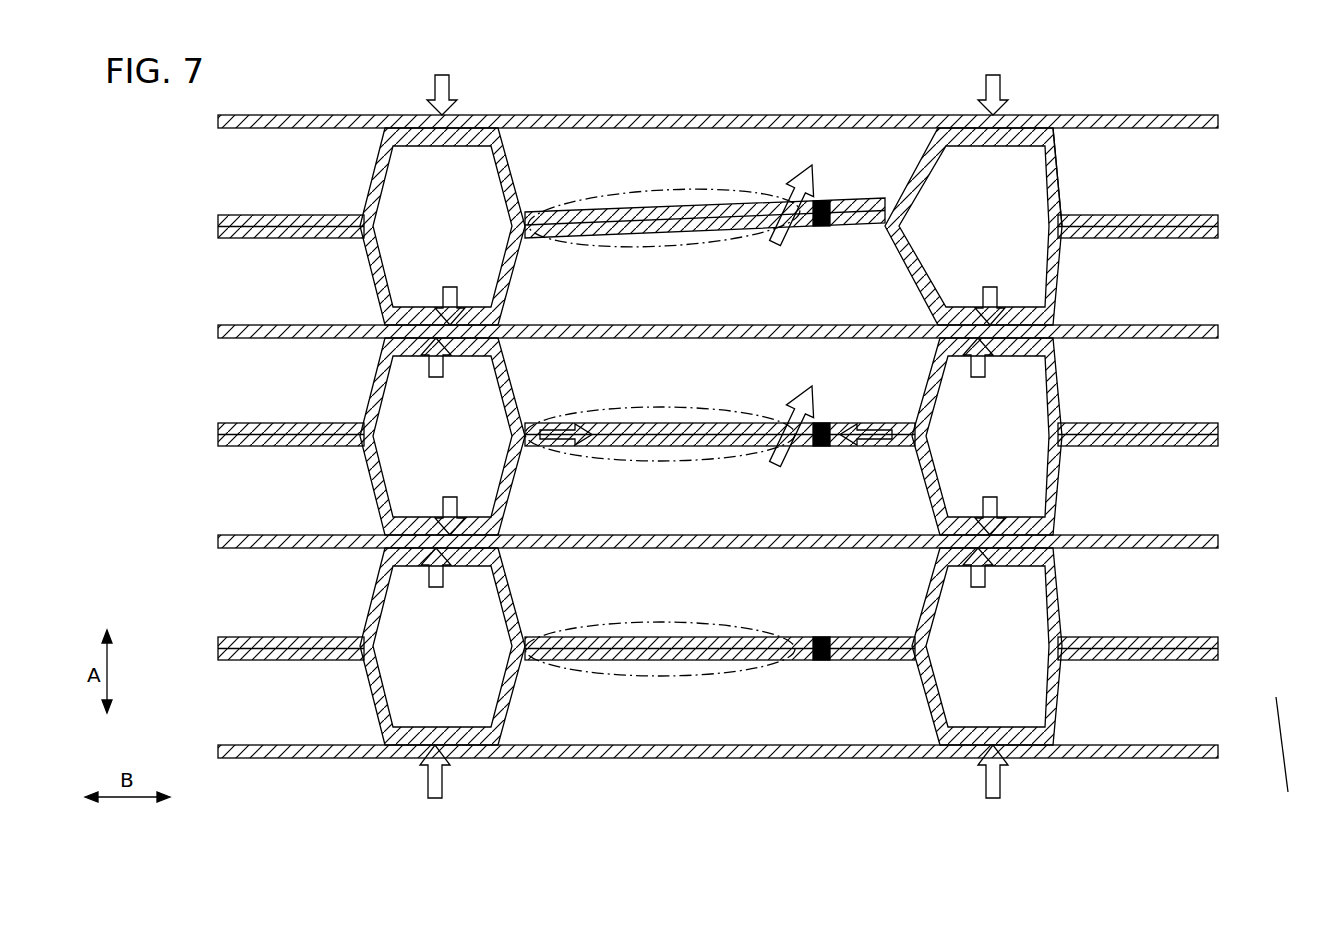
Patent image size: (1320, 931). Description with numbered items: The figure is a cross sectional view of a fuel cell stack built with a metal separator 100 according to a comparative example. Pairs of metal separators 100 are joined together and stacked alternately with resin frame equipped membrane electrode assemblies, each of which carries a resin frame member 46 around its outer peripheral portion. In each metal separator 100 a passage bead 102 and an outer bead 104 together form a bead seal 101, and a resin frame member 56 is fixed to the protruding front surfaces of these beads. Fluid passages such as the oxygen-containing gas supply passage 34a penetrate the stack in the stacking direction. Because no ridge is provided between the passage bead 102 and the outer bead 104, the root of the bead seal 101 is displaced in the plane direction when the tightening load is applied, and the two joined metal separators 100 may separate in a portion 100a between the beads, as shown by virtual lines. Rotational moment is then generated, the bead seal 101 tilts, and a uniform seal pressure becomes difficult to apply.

The resin frame member 46 is at (1166, 115).
The resin frame member 56 is at (479, 128).
The metal separator 100 is at (218, 214).
The portion 100a is at (646, 191).
The bead seal 101 is at (1066, 149).
The passage bead 102 is at (1062, 183).
The outer bead 104 is at (508, 175).
The oxygen-containing gas supply passage 34a is at (1172, 759).